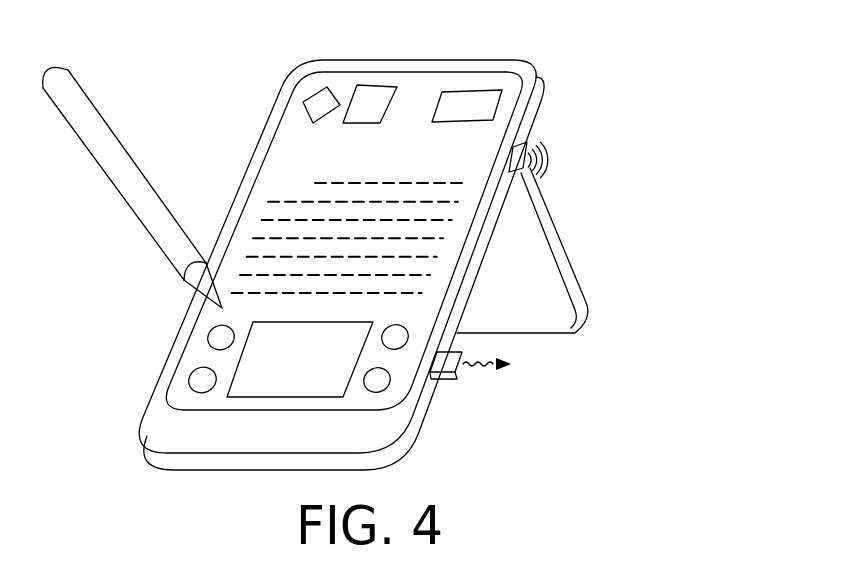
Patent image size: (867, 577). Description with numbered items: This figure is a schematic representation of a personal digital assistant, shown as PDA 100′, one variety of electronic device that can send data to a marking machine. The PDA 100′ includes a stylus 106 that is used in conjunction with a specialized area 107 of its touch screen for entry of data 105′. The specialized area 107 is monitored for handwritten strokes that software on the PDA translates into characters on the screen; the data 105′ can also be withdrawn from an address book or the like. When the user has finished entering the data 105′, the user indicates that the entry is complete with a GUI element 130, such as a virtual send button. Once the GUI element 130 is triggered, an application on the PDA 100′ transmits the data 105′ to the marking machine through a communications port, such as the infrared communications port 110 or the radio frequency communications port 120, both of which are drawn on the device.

The PDA 100′ is at (600, 97).
The data 105′ is at (300, 150).
The stylus 106 is at (131, 153).
The specialized area 107 is at (240, 365).
The infrared communications port 110 is at (527, 143).
The radio frequency communications port 120 is at (448, 383).
The GUI element 130 is at (472, 91).